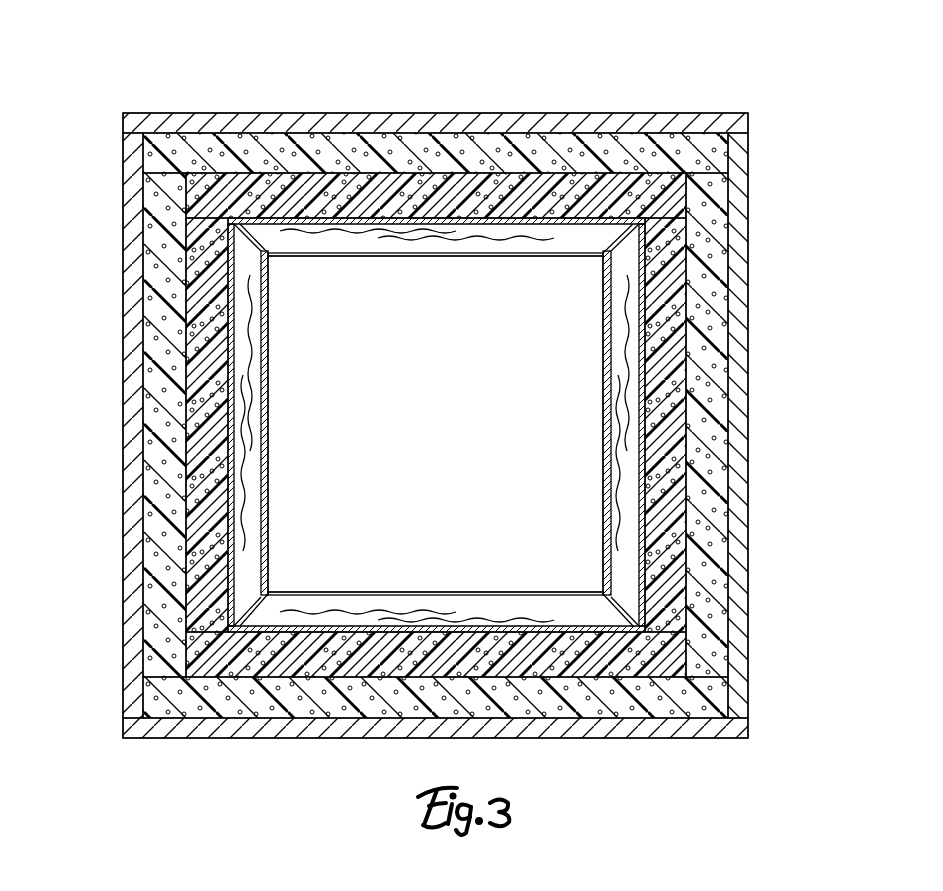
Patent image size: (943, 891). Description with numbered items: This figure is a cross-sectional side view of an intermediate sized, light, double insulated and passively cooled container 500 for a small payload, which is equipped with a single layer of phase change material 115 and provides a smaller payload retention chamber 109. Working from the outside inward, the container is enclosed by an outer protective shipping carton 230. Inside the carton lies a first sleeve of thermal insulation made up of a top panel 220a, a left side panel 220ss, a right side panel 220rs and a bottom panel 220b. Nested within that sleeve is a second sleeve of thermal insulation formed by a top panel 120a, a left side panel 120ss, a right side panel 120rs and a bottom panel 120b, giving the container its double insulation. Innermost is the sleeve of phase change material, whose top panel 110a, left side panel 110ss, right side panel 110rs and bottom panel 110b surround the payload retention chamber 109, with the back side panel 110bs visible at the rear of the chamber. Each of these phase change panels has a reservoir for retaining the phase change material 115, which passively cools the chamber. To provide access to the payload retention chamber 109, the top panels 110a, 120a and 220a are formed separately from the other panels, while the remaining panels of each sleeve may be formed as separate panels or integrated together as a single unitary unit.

The double insulated container 500 is at (137, 64).
The outer protective shipping carton 230 is at (697, 125).
The top panel of thermal insulation sleeve 220a is at (637, 150).
The left side panel of thermal insulation sleeve 220ss is at (160, 240).
The right side panel of thermal insulation sleeve 220rs is at (708, 238).
The bottom panel of thermal insulation sleeve 220b is at (187, 690).
The top panel of thermal insulation sleeve 120a is at (568, 185).
The left side panel of thermal insulation sleeve 120ss is at (200, 322).
The right side panel of thermal insulation sleeve 120rs is at (688, 305).
The bottom panel of thermal insulation sleeve 120b is at (337, 657).
The top panel of phase change material sleeve 110a is at (385, 257).
The left side panel of phase change material sleeve 110ss is at (268, 378).
The right side panel of phase change material sleeve 110rs is at (605, 394).
The bottom panel of phase change material sleeve 110b is at (512, 592).
The back side panel of phase change material sleeve 110bs is at (368, 499).
The phase change material 115 is at (540, 242).
The payload retention chamber 109 is at (403, 372).